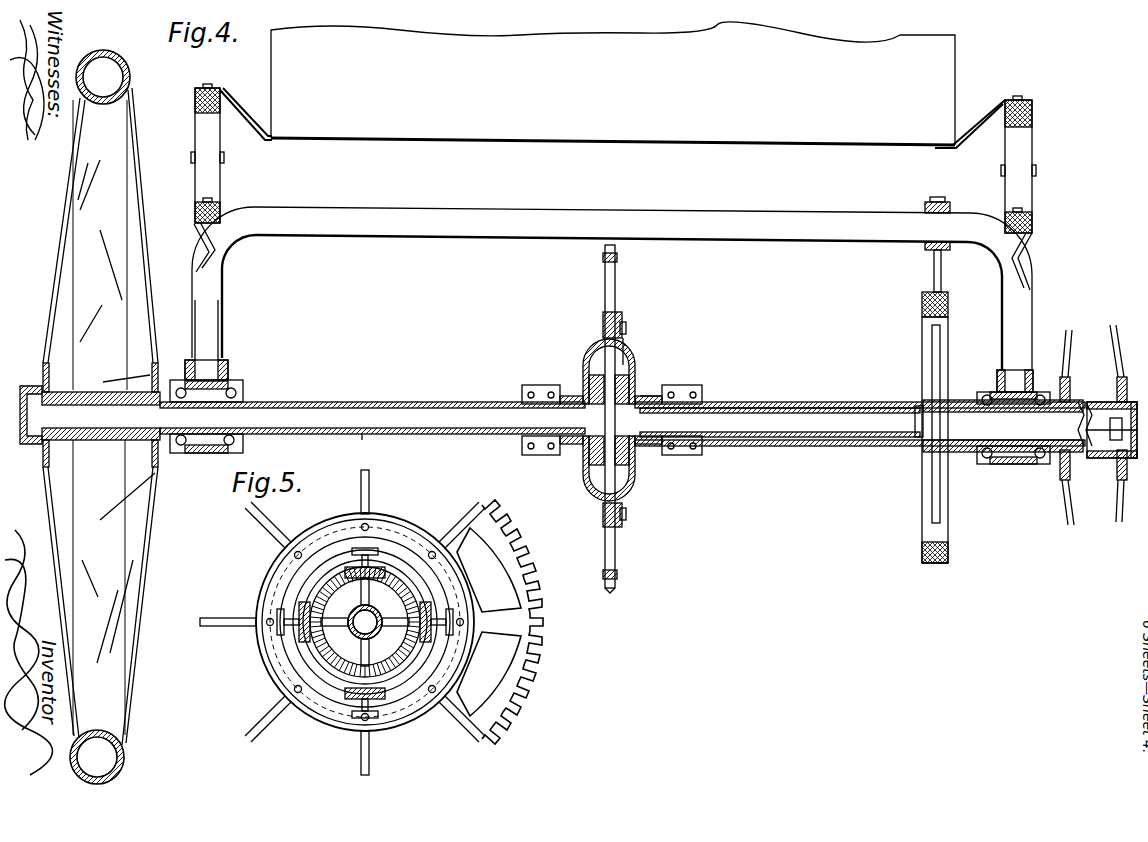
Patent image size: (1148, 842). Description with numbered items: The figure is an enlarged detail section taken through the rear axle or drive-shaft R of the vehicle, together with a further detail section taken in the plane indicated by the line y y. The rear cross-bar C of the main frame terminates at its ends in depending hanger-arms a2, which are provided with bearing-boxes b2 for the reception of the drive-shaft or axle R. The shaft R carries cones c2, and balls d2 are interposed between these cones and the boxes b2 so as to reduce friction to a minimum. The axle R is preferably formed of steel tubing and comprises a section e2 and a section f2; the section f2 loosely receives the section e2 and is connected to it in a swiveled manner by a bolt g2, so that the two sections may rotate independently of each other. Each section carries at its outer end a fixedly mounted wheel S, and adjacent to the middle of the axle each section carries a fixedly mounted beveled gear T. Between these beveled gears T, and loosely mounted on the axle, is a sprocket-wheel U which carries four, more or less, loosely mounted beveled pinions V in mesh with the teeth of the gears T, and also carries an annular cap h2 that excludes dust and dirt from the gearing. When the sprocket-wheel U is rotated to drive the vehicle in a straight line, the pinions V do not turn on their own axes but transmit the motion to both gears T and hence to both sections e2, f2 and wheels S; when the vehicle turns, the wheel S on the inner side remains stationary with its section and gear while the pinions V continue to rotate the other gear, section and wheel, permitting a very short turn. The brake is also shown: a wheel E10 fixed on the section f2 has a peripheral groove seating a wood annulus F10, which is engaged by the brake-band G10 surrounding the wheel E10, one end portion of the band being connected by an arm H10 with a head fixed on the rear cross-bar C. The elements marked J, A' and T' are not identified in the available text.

In FIG. 4, the tank / body J is at (613, 83).
In FIG. 4, the rear cross-bar C is at (540, 213).
In FIG. 4, the upright post A' is at (613, 187).
In FIG. 4, the hanger-arm a2 is at (220, 343).
In FIG. 4, the cone c2 is at (245, 392).
In FIG. 4, the ball d2 is at (245, 445).
In FIG. 4, the shaft section e2 is at (368, 446).
In FIG. 4, the shaft section f2 is at (765, 444).
In FIG. 4, the bolt g2 is at (934, 440).
In FIG. 4, the bearing-box b2 is at (1036, 466).
In FIG. 4, the arm H10 is at (933, 262).
In FIG. 4, the wheel E10 is at (926, 520).
In FIG. 4, the wood annulus F10 is at (940, 565).
In FIG. 4, the brake-band G10 is at (924, 566).
In FIG. 4, the drive-shaft or axle R is at (556, 413).
In FIG. 5, the drive-shaft or axle R is at (358, 630).
In FIG. 4, the wheel S is at (1076, 508).
In FIG. 4, the sprocket-wheel U is at (616, 270).
In FIG. 5, the sprocket-wheel U is at (520, 641).
In FIG. 4, the beveled pinion V is at (638, 365).
In FIG. 5, the beveled pinion V is at (378, 568).
In FIG. 4, the beveled gear T is at (612, 402).
In FIG. 4, the bearing flange arm T' is at (655, 379).
In FIG. 5, the bearing flange arm T' is at (365, 633).
In FIG. 4, the annular cap h2 is at (626, 346).
In FIG. 4, the section line y is at (625, 330).